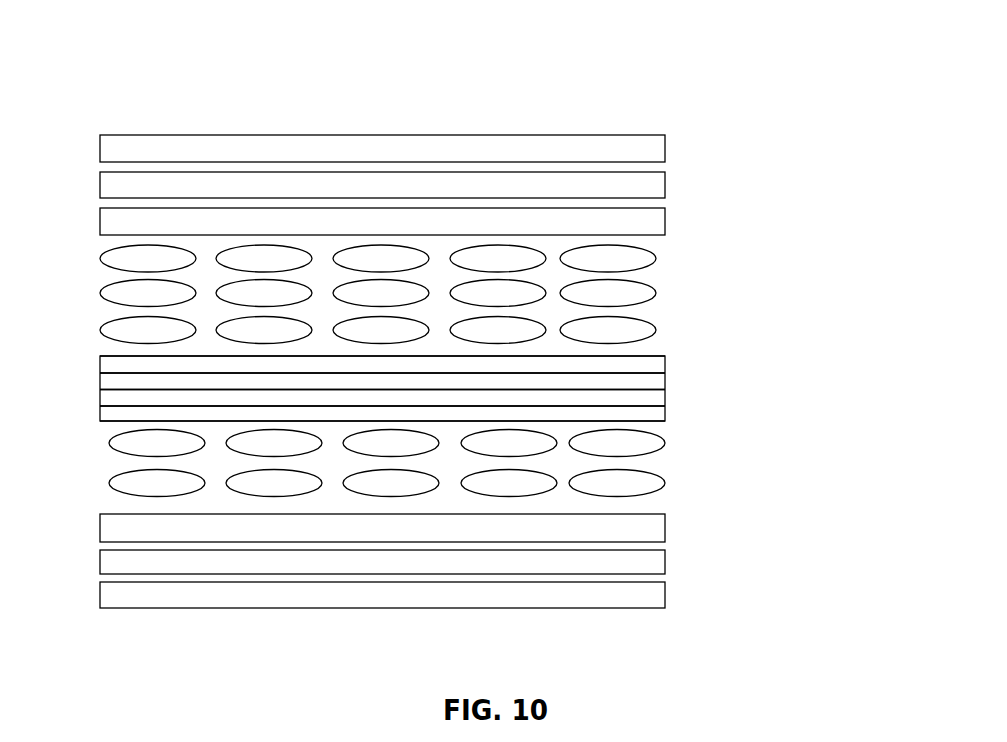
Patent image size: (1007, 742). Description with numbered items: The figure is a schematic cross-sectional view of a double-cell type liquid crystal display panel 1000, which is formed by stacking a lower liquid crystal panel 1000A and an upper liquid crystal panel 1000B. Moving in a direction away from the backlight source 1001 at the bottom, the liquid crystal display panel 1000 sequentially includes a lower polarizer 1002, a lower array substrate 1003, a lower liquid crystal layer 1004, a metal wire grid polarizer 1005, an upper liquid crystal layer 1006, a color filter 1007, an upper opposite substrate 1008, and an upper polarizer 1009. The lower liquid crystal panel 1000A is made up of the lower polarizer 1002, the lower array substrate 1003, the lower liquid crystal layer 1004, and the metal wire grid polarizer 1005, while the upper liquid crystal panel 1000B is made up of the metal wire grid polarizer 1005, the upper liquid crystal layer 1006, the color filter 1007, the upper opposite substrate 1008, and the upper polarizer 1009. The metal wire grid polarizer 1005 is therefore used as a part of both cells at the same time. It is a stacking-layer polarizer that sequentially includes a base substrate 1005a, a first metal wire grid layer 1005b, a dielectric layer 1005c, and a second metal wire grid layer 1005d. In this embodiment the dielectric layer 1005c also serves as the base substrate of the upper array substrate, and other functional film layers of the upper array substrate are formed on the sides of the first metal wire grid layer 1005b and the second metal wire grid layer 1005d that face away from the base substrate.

The liquid crystal display panel 1000 is at (351, 101).
The lower liquid crystal panel 1000A is at (852, 400).
The upper liquid crystal panel 1000B is at (852, 378).
The backlight source 1001 is at (665, 596).
The lower polarizer 1002 is at (665, 563).
The lower array substrate 1003 is at (665, 531).
The lower liquid crystal layer 1004 is at (665, 471).
The metal wire grid polarizer 1005 is at (429, 386).
The base substrate 1005a is at (81, 415).
The first metal wire grid layer 1005b is at (82, 396).
The dielectric layer 1005c is at (81, 378).
The second metal wire grid layer 1005d is at (84, 359).
The upper liquid crystal layer 1006 is at (665, 292).
The color filter 1007 is at (665, 218).
The upper opposite substrate 1008 is at (665, 181).
The upper polarizer 1009 is at (665, 145).